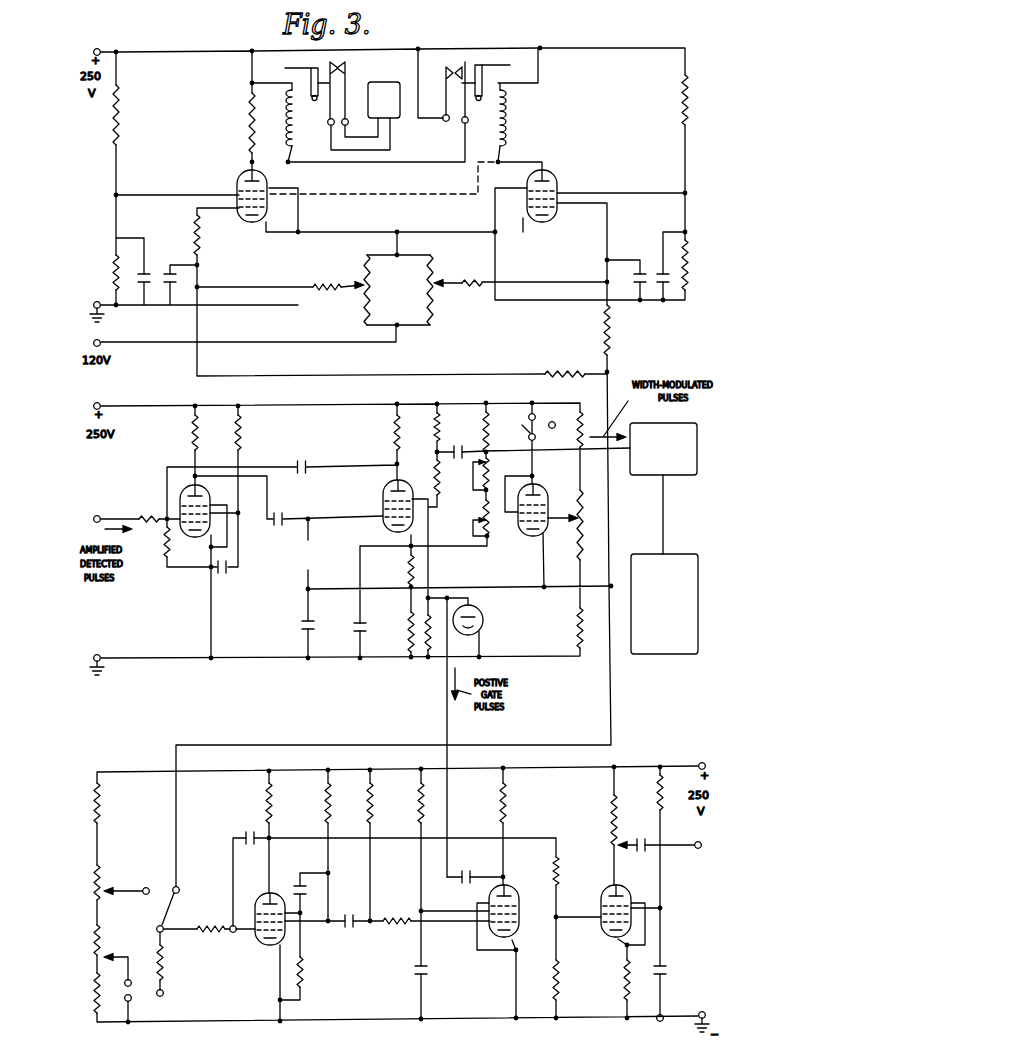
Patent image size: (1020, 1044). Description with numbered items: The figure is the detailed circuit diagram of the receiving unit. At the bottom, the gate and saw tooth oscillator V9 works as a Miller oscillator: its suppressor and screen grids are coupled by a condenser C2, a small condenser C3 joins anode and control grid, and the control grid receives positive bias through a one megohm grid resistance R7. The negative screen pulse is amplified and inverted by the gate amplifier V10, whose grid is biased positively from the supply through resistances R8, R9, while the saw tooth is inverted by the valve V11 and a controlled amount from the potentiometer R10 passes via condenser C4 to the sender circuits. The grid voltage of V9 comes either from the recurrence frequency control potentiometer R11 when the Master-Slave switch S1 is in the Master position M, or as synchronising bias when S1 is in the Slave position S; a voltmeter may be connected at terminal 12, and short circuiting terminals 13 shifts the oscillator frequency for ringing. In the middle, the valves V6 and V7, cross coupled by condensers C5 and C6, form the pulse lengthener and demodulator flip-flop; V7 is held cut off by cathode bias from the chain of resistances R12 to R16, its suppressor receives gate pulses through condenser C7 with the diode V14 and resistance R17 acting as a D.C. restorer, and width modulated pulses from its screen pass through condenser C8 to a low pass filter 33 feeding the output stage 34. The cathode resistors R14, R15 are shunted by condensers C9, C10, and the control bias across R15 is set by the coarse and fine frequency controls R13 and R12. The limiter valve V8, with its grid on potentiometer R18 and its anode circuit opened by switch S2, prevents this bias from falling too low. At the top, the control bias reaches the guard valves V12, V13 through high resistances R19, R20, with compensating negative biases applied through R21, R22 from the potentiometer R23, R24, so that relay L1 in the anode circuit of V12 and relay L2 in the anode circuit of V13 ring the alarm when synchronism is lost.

The relay L1 is at (345, 66).
The relay L2 is at (456, 68).
The guard and ringing valve V12 is at (240, 178).
The guard and ringing valve V13 is at (555, 173).
The high resistance R19 is at (567, 371).
The high resistance R20 is at (611, 330).
The high resistance R21 is at (333, 293).
The high resistance R22 is at (473, 282).
The potentiometer R23 is at (385, 290).
The potentiometer R24 is at (431, 304).
The pulse lengthener and demodulator valve V6 is at (187, 490).
The pulse lengthener and demodulator valve V7 is at (385, 475).
The limiter valve V8 is at (554, 474).
The diode V14 is at (486, 620).
The condenser C5 is at (278, 526).
The condenser C6 is at (304, 460).
The condenser C8 is at (458, 460).
The condenser C9 is at (302, 632).
The condenser C10 is at (353, 633).
The fine frequency control R12 is at (490, 540).
The coarse frequency control R13 is at (490, 467).
The cathode resistor R14 is at (408, 566).
The cathode resistor R15 is at (410, 620).
The resistance R16 is at (484, 420).
The resistance R17 is at (427, 633).
The potentiometer R18 is at (590, 505).
The Slave position S is at (354, 653).
The switch S2 is at (520, 436).
The Master position M is at (351, 658).
The low pass filter 33 is at (697, 433).
The output stage 34 is at (698, 565).
The recurrence frequency control potentiometer R11 is at (100, 887).
The Master-Slave switch S1 is at (157, 925).
The grid resistance R7 is at (207, 936).
The terminal 12 is at (165, 996).
The terminals 13 is at (131, 1001).
The small condenser C3 is at (247, 832).
The gate and saw tooth oscillator V9 is at (264, 893).
The condenser C2 is at (298, 880).
The resistance R8 is at (375, 800).
The resistance R9 is at (396, 930).
The condenser C7 is at (466, 870).
The gate amplifier V10 is at (518, 888).
The valve V11 is at (606, 938).
The potentiometer R10 is at (611, 822).
The condenser C4 is at (639, 835).